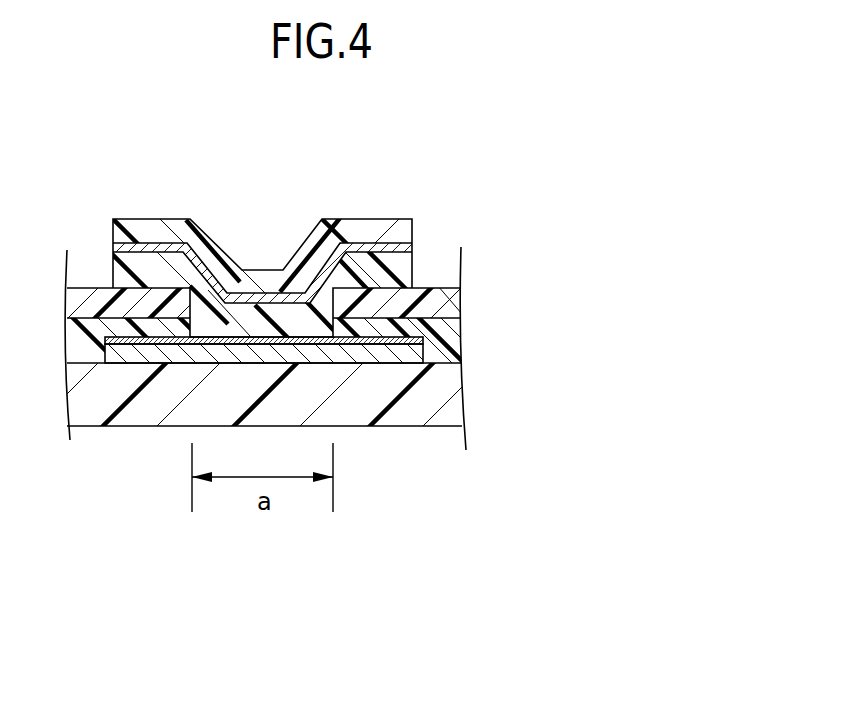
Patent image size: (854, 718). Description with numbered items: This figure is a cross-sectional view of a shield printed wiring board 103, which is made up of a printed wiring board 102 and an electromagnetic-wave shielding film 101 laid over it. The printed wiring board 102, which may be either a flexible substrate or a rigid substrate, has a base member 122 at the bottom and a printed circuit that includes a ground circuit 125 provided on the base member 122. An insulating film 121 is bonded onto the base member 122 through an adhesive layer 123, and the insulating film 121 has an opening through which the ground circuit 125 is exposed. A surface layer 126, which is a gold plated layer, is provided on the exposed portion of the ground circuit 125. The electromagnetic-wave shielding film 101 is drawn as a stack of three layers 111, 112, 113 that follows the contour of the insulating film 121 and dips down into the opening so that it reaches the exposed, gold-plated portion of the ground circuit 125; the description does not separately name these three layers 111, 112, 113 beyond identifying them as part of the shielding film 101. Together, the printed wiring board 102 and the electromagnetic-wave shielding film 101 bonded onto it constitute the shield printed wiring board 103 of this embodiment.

The electromagnetic-wave shielding film 101 is at (366, 232).
The first electrode 111 is at (321, 264).
The second electrode 112 is at (412, 232).
The light-emitting layer 113 is at (412, 248).
The printed wiring board 102 is at (337, 348).
The insulating film 121 is at (458, 292).
The base member 122 is at (293, 398).
The adhesive layer 123 is at (460, 332).
The ground circuit 125 is at (440, 352).
The surface layer 126 is at (438, 341).
The shield printed wiring board 103 is at (384, 287).